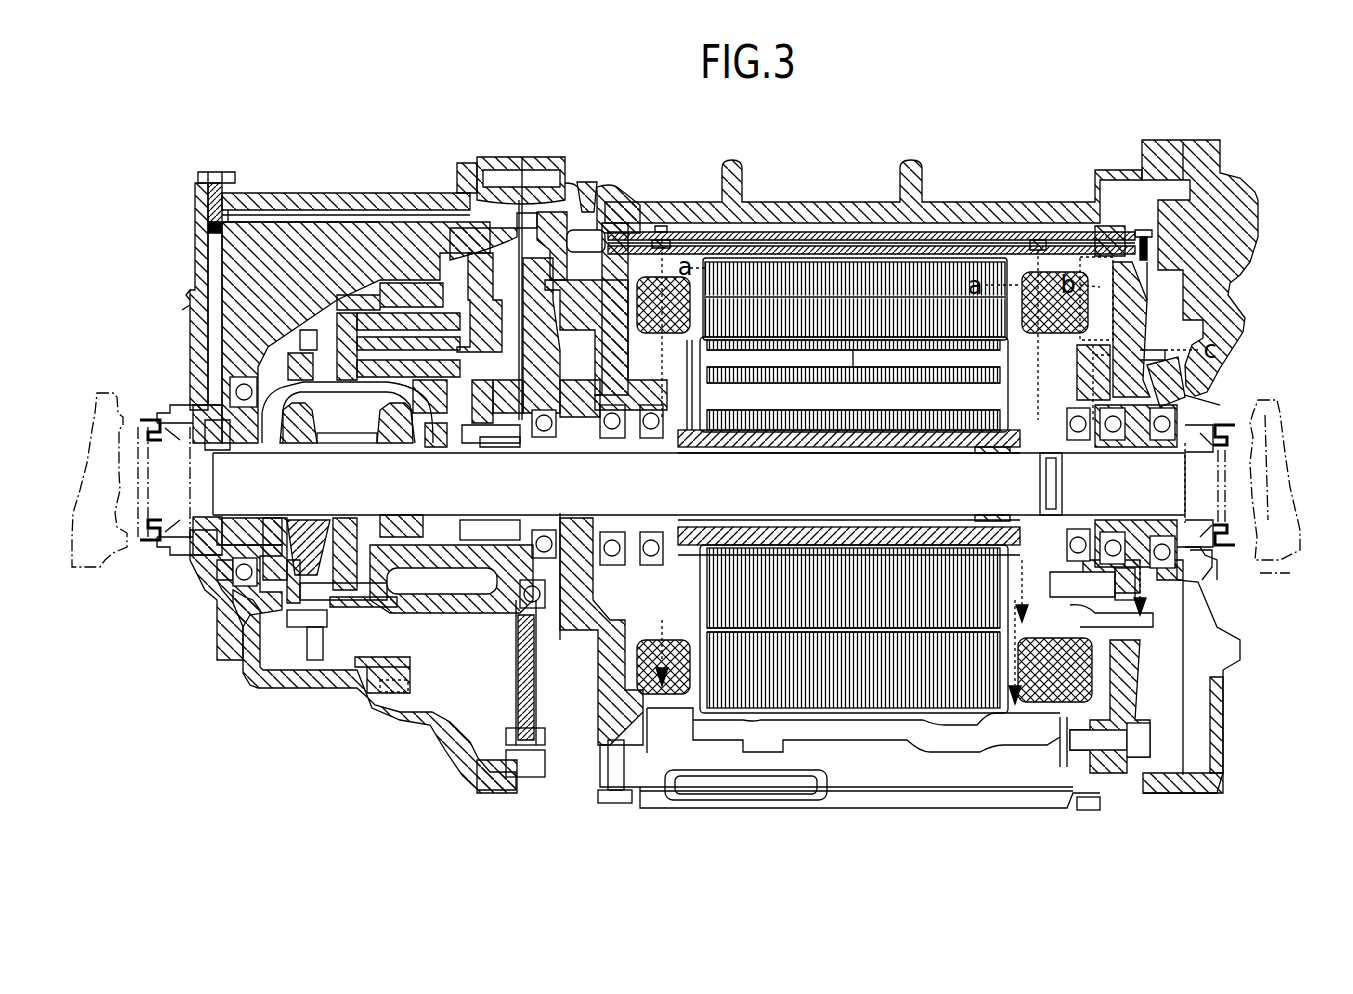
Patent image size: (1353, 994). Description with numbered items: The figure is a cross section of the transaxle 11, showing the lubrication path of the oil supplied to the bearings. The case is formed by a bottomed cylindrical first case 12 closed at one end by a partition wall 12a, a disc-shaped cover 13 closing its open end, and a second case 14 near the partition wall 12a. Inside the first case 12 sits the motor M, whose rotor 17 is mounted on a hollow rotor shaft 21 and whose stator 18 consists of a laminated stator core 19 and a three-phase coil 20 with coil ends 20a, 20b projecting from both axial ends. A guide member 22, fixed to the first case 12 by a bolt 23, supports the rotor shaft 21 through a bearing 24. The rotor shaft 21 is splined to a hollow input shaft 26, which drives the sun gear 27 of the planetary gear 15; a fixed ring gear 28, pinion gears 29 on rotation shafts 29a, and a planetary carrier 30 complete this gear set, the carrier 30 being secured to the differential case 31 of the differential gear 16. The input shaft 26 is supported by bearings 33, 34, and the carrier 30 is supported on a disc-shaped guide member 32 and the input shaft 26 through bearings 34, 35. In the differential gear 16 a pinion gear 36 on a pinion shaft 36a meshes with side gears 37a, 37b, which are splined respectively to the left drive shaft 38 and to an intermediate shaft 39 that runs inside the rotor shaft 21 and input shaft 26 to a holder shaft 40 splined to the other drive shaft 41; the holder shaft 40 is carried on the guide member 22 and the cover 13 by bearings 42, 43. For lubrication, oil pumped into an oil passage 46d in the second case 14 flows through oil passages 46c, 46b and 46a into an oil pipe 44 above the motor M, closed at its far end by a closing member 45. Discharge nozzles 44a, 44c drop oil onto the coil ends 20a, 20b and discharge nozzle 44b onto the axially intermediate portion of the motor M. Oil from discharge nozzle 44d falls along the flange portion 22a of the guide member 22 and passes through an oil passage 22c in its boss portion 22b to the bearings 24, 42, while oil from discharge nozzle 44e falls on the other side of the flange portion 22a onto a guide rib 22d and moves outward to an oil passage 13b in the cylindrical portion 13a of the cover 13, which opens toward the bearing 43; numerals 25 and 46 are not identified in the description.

The transaxle 11 is at (931, 124).
The first case 12 is at (797, 202).
The partition wall 12a is at (615, 670).
The cover 13 is at (1250, 240).
The cylindrical portion 13a is at (1228, 322).
The oil passage 13b is at (1172, 375).
The second case 14 is at (190, 302).
The planetary gear 15 is at (452, 262).
The differential gear 16 is at (396, 616).
The rotor 17 is at (870, 565).
The stator 18 is at (855, 720).
The stator core 19 is at (1010, 670).
The three-phase coil 20 is at (927, 700).
The coil end 20a is at (637, 680).
The coil end 20b is at (1055, 692).
The rotor shaft 21 is at (782, 448).
The guide member 22 is at (1080, 608).
The flange portion 22a is at (1128, 314).
The boss portion 22b is at (862, 330).
The oil passage 22c is at (1095, 360).
The guide rib 22d is at (1150, 348).
The bolt 23 is at (1155, 738).
The bearing 24 is at (1078, 442).
The bearing 25 is at (640, 415).
The input shaft 26 is at (588, 520).
The sun gear 27 is at (478, 445).
The ring gear 28 is at (398, 290).
The pinion gears 29 is at (515, 300).
The rotation shafts 29a is at (504, 332).
The planetary carrier 30 is at (503, 420).
The differential case 31 is at (240, 517).
The guide member 32 is at (518, 680).
The bearing 33 is at (625, 450).
The bearing 34 is at (545, 530).
The bearing 35 is at (520, 600).
The pinion gear 36 is at (290, 517).
The pinion shaft 36a is at (348, 520).
The side gear 37a is at (272, 450).
The side gear 37b is at (400, 447).
The drive shaft 38 is at (217, 473).
The intermediate shaft 39 is at (860, 467).
The holder shaft 40 is at (982, 455).
The drive shaft 41 is at (1165, 465).
The bearing 42 is at (1112, 447).
The bearing 43 is at (1160, 535).
The oil pipe 44 is at (983, 218).
The discharge nozzle 44a is at (660, 232).
The discharge nozzle 44b is at (851, 243).
The discharge nozzle 44c is at (1038, 240).
The discharge nozzle 44d is at (1100, 232).
The discharge nozzle 44e is at (1127, 240).
The closing member 45 is at (1147, 266).
The bolt 46 is at (216, 202).
The oil passage 46a is at (587, 252).
The oil passage 46b is at (590, 184).
The oil passage 46c is at (316, 212).
The oil passage 46d is at (200, 338).